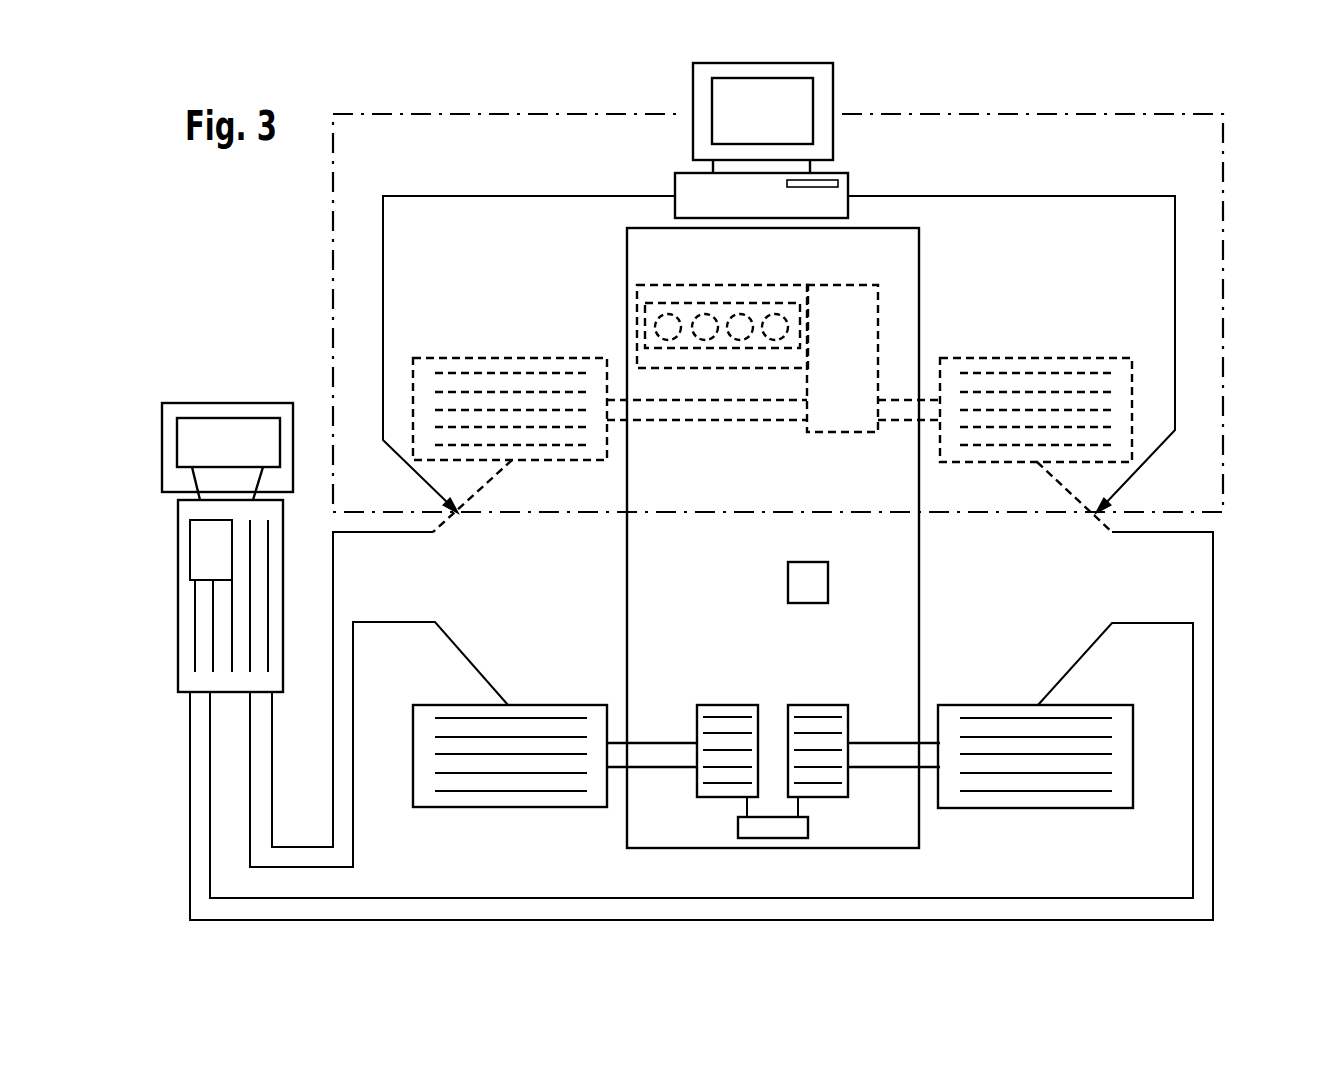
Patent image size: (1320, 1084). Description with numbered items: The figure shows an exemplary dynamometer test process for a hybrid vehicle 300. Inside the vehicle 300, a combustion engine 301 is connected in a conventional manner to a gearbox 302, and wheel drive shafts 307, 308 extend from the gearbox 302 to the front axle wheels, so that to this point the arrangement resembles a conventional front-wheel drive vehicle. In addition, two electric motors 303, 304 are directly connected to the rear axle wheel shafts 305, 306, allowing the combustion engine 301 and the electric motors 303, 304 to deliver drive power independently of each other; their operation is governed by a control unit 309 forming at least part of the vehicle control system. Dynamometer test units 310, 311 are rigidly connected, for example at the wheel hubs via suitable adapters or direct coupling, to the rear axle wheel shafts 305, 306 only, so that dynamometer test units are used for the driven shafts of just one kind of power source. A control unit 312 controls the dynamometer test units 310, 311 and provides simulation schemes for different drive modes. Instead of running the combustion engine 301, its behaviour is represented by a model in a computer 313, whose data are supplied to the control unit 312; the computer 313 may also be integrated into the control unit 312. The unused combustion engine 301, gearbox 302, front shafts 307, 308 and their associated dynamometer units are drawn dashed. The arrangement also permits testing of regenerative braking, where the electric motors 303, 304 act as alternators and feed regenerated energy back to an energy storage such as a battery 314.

The vehicle 300 is at (900, 270).
The combustion engine 301 is at (647, 298).
The gearbox 302 is at (870, 338).
The electric motor 303 is at (727, 713).
The electric motor 304 is at (817, 713).
The rear axle wheel shaft 305 is at (647, 755).
The rear axle wheel shaft 306 is at (877, 755).
The front wheel shaft 307 is at (650, 410).
The front wheel shaft 308 is at (907, 413).
The control unit 309 is at (797, 570).
The dynamometer test unit 310 is at (447, 795).
The dynamometer test unit 311 is at (990, 797).
The control unit 312 is at (272, 622).
The computer 313 is at (687, 185).
The battery 314 is at (798, 827).